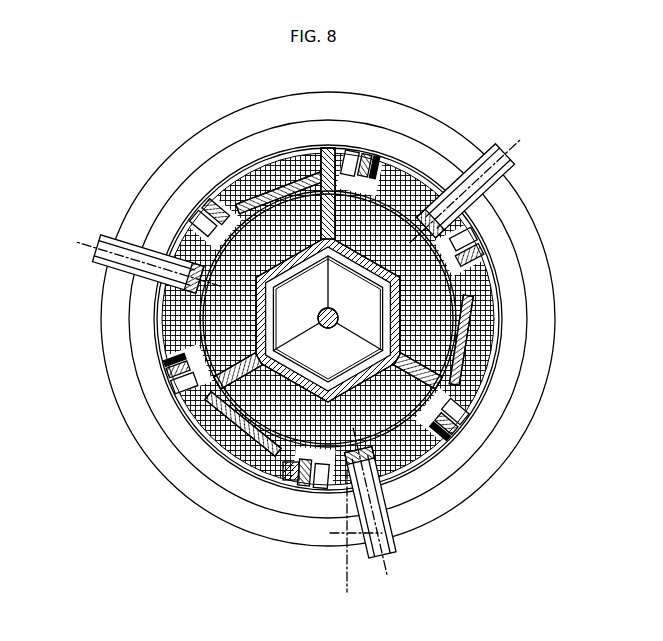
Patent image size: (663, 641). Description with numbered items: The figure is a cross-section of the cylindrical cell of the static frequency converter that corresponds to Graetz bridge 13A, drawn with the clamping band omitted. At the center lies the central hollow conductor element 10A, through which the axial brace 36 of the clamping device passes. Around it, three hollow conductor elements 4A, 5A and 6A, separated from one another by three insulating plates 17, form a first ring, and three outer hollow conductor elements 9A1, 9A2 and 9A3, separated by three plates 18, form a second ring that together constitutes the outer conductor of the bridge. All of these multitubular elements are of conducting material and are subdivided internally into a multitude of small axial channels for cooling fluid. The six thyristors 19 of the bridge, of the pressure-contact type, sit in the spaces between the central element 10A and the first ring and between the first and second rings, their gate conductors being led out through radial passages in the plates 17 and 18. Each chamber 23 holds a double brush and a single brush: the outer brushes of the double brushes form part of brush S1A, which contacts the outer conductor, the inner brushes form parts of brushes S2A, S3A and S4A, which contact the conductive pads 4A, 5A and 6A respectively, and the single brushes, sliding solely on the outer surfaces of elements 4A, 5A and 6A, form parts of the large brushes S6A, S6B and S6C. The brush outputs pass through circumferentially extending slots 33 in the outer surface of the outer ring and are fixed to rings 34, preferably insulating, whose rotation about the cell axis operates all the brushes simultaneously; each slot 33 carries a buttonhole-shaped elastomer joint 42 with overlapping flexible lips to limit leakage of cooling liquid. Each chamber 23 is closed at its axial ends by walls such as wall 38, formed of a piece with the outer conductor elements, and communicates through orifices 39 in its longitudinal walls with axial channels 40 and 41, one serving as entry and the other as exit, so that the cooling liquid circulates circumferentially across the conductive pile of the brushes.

The Graetz bridge 13A is at (184, 94).
The hollow conductor element 6A is at (226, 196).
The outer hollow conductor element 9A1 is at (470, 312).
The outer hollow conductor element 9A2 is at (225, 440).
The outer hollow conductor element 9A3 is at (285, 152).
The chamber 23 is at (324, 319).
The axial channel 40 is at (348, 150).
The orifice 39 is at (368, 152).
The slot 33 is at (390, 150).
The axial channel 41 is at (478, 255).
The brush S2A is at (470, 226).
The brush S3A is at (335, 500).
The brush S4A is at (176, 236).
The hollow conductor element 5A is at (290, 474).
The axial brace 36 is at (430, 340).
The insulating plate 17 is at (318, 160).
The plate 18 is at (330, 150).
The hollow conductor element 4A is at (480, 290).
The thyristor 19 is at (190, 428).
The wall 38 is at (422, 160).
The elastomer joint 42 is at (446, 160).
The ring 34 is at (553, 368).
The large brush S6A is at (482, 150).
The large brush S6B is at (392, 542).
The large brush S6C is at (106, 285).
The central hollow conductor element 10A is at (400, 456).
The brush S1A is at (505, 206).